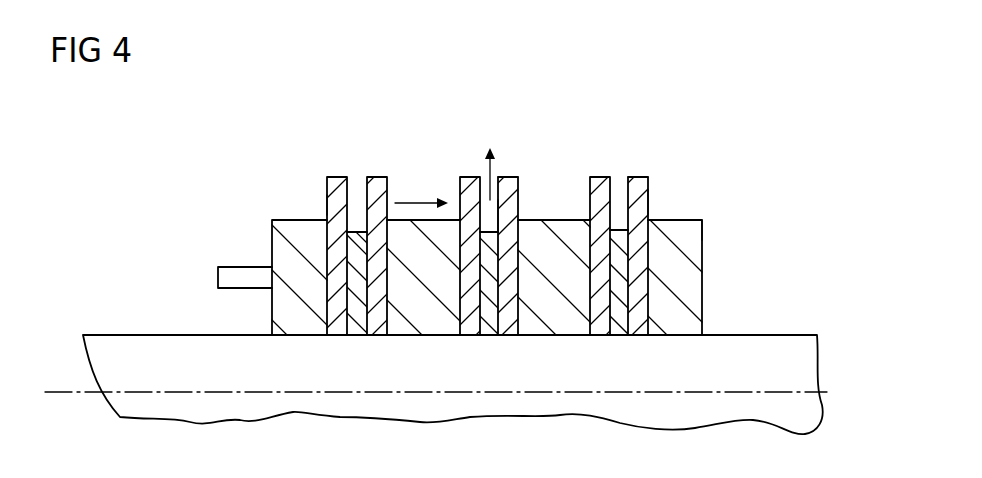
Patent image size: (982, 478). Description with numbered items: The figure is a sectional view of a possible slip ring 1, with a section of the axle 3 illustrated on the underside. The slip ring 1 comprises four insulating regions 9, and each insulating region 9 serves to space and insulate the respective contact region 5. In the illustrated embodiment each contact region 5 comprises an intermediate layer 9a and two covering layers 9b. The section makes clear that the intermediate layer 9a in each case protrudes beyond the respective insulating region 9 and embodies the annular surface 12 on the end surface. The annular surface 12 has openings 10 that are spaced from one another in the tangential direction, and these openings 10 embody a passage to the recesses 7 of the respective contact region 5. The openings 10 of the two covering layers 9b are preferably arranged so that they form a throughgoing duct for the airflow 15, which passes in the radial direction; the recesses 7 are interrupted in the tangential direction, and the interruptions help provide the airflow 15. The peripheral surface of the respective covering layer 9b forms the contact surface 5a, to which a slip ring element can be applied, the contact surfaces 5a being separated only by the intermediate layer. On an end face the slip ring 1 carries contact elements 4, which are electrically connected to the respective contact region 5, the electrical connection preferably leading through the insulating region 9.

The slip ring 1 is at (698, 125).
The axle 3 is at (63, 389).
The contact element 4 is at (247, 275).
The contact region 5 is at (356, 160).
The contact surface 5a is at (634, 179).
The recess 7 is at (509, 176).
The insulating region 9 is at (297, 252).
The intermediate layer 9a is at (618, 218).
The covering layer 9b is at (510, 166).
The opening 10 is at (643, 203).
The annular surface 12 is at (326, 210).
The airflow 15 is at (413, 203).